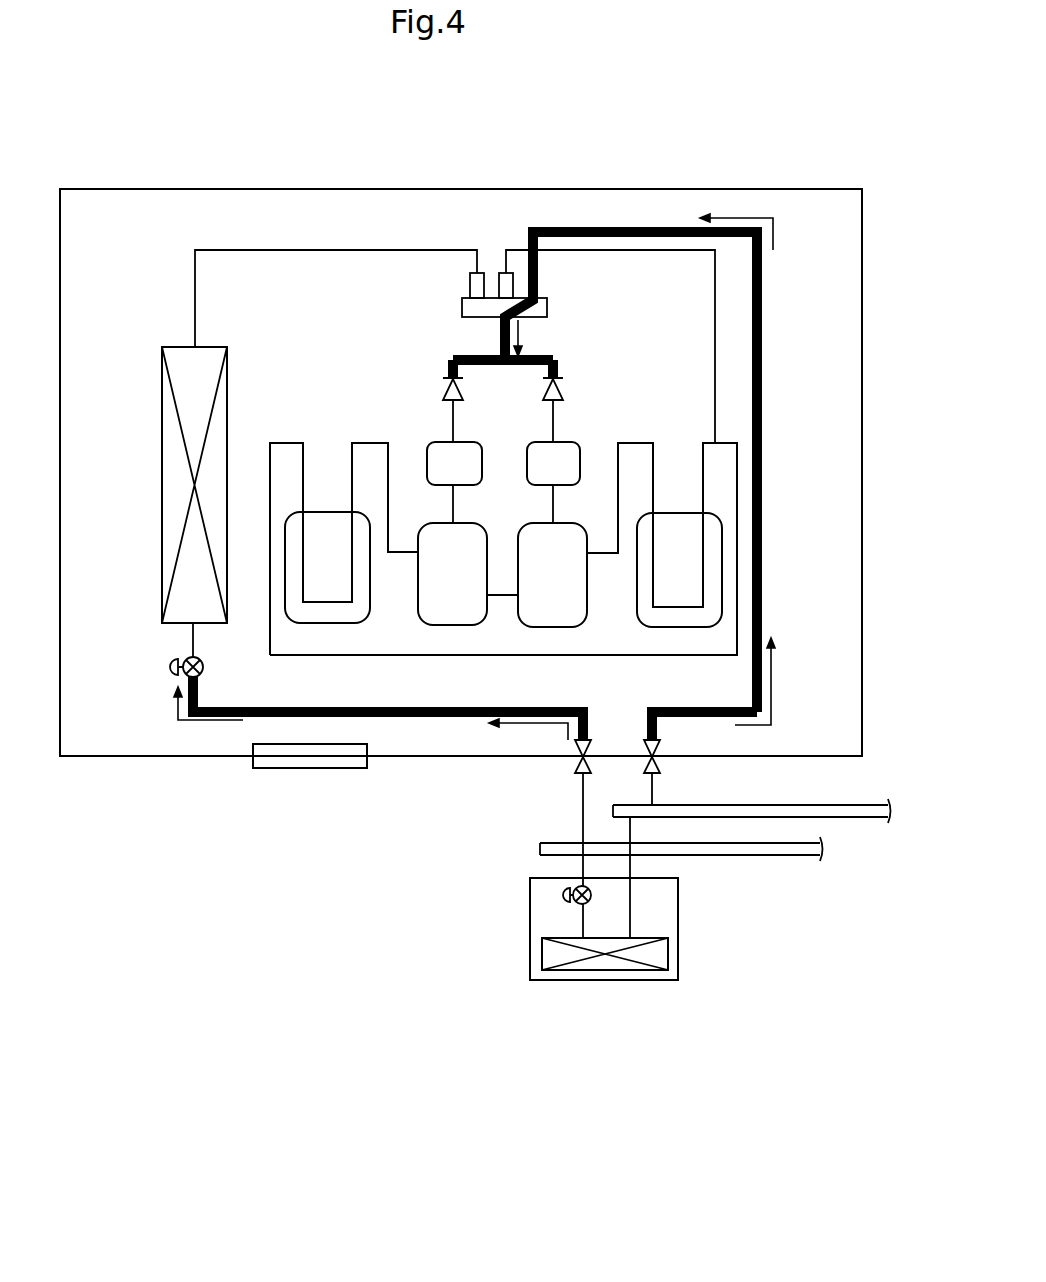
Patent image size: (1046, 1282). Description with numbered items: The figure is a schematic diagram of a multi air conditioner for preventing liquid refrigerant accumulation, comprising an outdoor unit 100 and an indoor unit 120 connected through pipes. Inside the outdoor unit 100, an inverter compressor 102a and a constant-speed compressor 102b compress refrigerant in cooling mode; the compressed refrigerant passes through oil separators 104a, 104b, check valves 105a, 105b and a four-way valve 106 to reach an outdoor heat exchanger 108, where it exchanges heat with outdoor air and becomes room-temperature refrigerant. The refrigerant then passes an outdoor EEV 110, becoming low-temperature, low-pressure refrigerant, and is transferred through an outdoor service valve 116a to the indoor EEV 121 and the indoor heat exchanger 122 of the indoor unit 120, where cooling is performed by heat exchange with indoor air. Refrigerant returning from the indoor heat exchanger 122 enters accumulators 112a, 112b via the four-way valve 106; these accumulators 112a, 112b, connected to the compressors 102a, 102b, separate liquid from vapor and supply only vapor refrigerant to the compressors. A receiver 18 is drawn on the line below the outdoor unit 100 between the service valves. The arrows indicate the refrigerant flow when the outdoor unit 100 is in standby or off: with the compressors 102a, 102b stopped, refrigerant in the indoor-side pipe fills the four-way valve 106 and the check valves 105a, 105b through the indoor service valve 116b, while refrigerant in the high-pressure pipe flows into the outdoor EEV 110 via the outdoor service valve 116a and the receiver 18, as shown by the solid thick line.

The outdoor unit 100 is at (548, 189).
The inverter compressor 102a is at (432, 613).
The constant-speed compressor 102b is at (573, 617).
The oil separator 104a is at (437, 446).
The oil separator 104b is at (572, 446).
The check valve 105a is at (446, 390).
The check valve 105b is at (561, 390).
The four-way valve 106 is at (548, 307).
The outdoor heat exchanger 108 is at (178, 485).
The outdoor EEV 110 is at (166, 667).
The accumulator 112a is at (322, 625).
The accumulator 112b is at (705, 585).
The outdoor service valve 116a is at (576, 765).
The indoor service valve 116b is at (660, 765).
The receiver 18 is at (310, 768).
The indoor unit 120 is at (533, 992).
The indoor EEV 121 is at (560, 895).
The indoor heat exchanger 122 is at (605, 975).